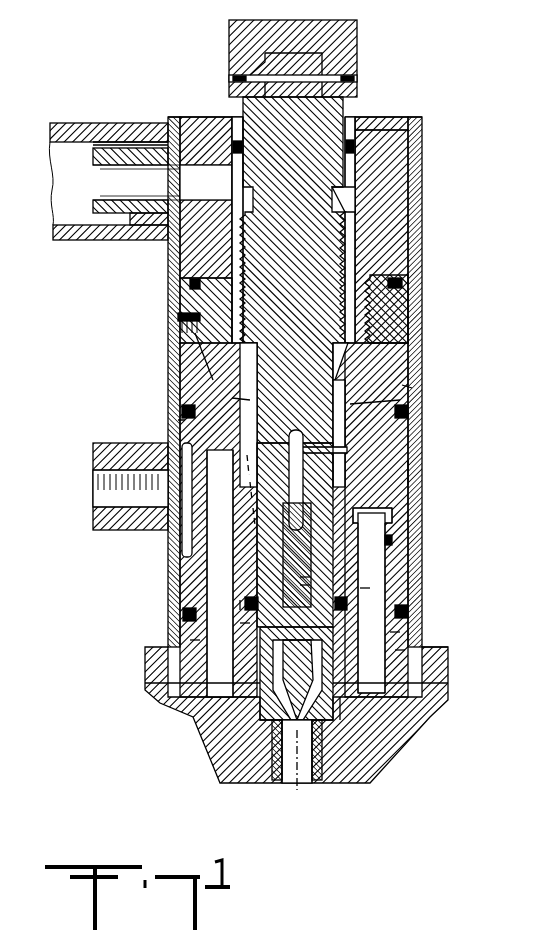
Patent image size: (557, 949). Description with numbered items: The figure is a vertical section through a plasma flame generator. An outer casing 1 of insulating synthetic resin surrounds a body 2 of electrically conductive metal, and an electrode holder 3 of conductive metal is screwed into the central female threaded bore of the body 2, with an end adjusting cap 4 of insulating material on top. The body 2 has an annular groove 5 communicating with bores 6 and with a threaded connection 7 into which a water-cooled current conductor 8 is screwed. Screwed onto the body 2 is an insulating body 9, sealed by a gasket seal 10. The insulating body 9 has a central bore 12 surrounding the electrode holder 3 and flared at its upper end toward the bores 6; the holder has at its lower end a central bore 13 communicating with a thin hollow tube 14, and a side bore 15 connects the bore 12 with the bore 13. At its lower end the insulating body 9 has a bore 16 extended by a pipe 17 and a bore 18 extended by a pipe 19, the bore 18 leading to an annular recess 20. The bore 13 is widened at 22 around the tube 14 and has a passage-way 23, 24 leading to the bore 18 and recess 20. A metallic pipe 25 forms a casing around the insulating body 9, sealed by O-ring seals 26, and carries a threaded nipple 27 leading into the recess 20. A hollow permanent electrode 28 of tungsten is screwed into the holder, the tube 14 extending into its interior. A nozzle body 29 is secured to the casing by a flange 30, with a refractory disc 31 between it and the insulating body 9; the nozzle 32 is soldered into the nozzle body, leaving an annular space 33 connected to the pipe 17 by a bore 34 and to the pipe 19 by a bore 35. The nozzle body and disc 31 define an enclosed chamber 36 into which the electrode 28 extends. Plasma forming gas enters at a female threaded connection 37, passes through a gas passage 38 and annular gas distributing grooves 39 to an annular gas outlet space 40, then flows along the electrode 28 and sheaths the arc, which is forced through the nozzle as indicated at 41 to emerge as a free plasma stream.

The casing 1 is at (420, 140).
The body 2 is at (390, 250).
The electrode holder 3 is at (313, 130).
The adjusting cap 4 is at (357, 50).
The annular groove 5 is at (355, 190).
The bores 6 is at (222, 260).
The threaded connection 7 is at (205, 165).
The water-cooled current conductor 8 is at (150, 215).
The insulating body 9 is at (395, 328).
The gasket seal 10 is at (396, 294).
The central bore 12 is at (335, 404).
The central bore 13 is at (300, 496).
The hollow tube 14 is at (345, 605).
The side bore 15 is at (330, 450).
The bore 16 is at (218, 540).
The pipe 17 is at (240, 600).
The bore 18 is at (360, 588).
The pipe 19 is at (395, 650).
The annular recess 20 is at (400, 472).
The widened portion 22 is at (300, 577).
The passage-way 23 is at (300, 585).
The passage-way 24 is at (388, 540).
The metallic pipe 25 is at (405, 386).
The O-ring seals 26 is at (395, 418).
The threaded nipple 27 is at (120, 445).
The permanent electrode 28 is at (400, 663).
The nozzle body 29 is at (365, 757).
The flange 30 is at (450, 638).
The disc 31 is at (190, 640).
The nozzle 32 is at (290, 780).
The annular space 33 is at (272, 775).
The bore 34 is at (280, 725).
The bore 35 is at (360, 720).
The enclosed chamber 36 is at (277, 685).
The female threaded connection 37 is at (178, 320).
The gas passage 38 is at (228, 383).
The annular gas distributing grooves 39 is at (390, 632).
The annular gas outlet space 40 is at (240, 623).
The arc 41 is at (297, 785).